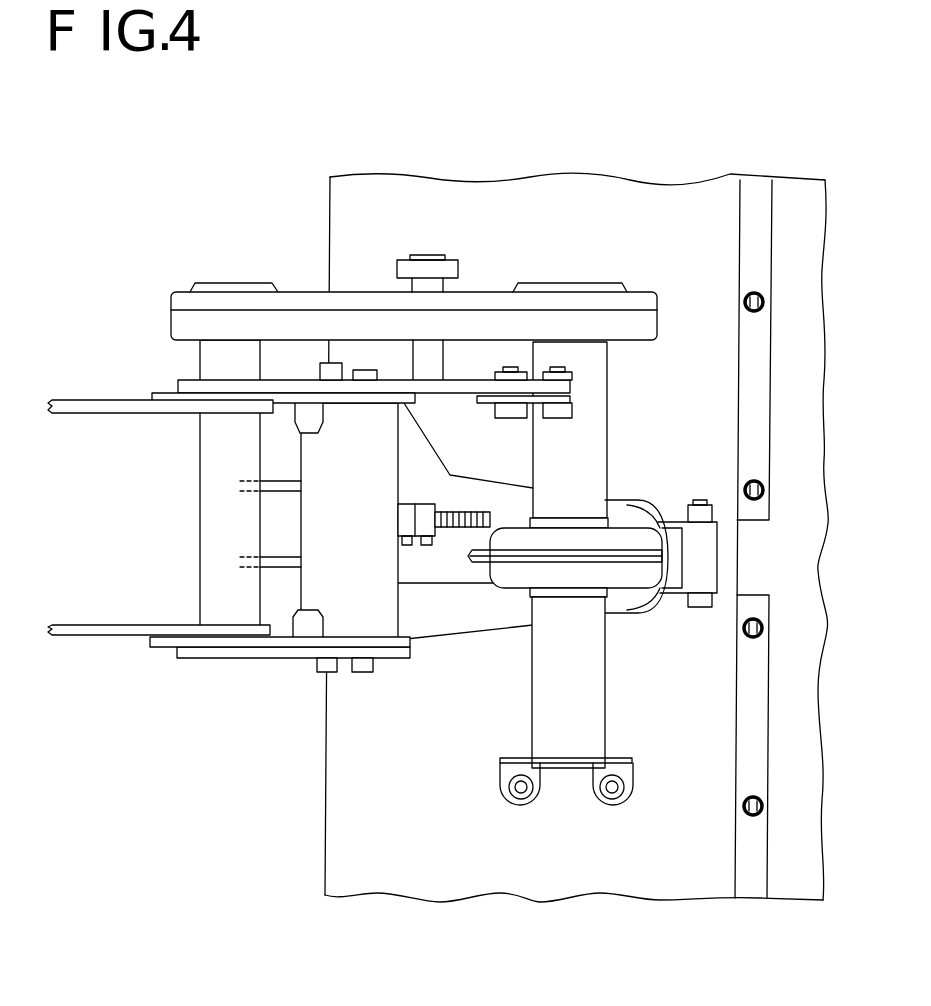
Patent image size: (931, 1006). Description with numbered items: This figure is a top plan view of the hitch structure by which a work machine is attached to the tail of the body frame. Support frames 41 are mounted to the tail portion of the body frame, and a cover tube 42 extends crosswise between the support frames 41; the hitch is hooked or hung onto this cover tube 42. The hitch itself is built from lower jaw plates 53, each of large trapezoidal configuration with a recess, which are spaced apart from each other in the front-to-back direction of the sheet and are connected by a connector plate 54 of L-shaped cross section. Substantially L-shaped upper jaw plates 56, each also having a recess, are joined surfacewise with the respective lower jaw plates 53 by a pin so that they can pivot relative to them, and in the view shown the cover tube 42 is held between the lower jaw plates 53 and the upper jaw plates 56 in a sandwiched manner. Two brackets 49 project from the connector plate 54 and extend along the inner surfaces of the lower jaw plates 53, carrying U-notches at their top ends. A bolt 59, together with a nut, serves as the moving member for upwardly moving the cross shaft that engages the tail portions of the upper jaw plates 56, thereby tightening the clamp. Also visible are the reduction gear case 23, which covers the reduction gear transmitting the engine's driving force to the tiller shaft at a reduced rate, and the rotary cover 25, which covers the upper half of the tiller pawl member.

The reduction gear case 23 is at (574, 518).
The rotary cover 25 is at (553, 195).
The support frames 41 is at (72, 400).
The cover tube 42 is at (194, 447).
The brackets 49 is at (240, 484).
The lower jaw plates 53 is at (152, 397).
The connector plate 54 is at (350, 472).
The upper jaw plates 56 is at (178, 386).
The bolt 59 is at (453, 544).